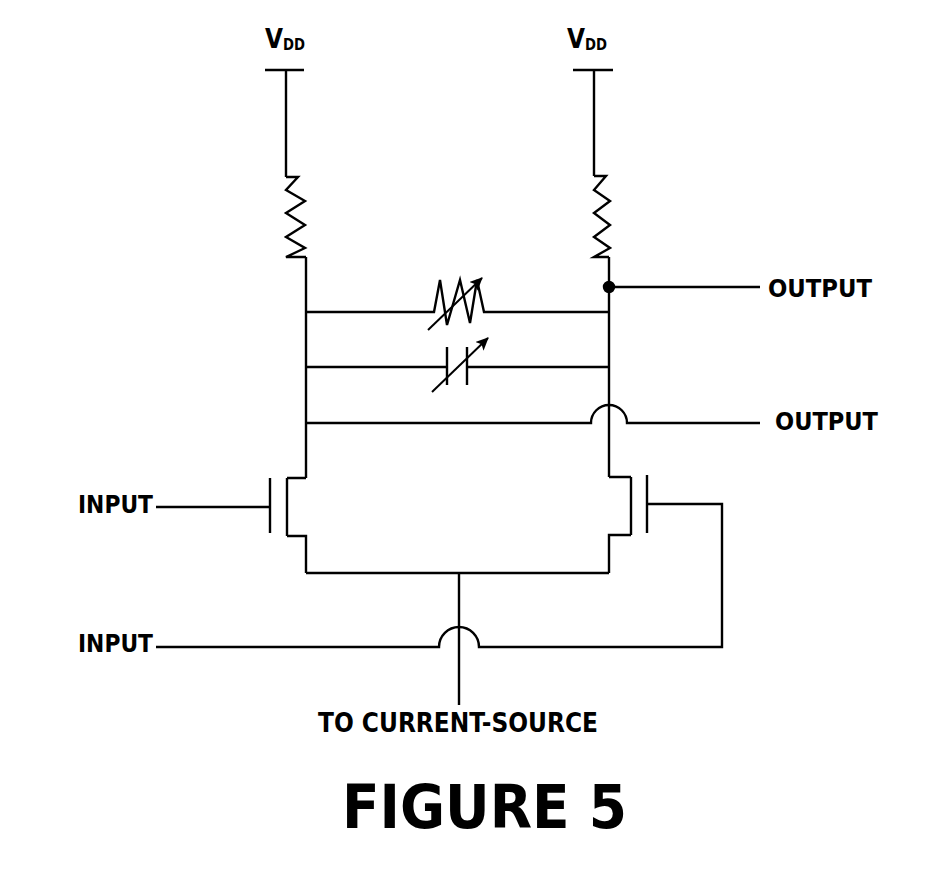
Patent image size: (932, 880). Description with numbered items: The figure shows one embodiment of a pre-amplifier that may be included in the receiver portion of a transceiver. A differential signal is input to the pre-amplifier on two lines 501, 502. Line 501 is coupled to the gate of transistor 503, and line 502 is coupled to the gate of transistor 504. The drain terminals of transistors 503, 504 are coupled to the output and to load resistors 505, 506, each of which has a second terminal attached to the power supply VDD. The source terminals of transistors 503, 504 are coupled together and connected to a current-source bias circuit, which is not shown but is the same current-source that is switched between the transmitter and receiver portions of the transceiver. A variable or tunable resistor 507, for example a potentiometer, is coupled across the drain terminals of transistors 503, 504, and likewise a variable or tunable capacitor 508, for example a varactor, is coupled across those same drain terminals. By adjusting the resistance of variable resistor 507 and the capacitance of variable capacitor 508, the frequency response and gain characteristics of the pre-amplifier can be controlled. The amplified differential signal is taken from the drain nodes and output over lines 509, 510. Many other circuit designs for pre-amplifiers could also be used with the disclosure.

The line 501 is at (213, 493).
The line 502 is at (439, 576).
The transistor 503 is at (306, 493).
The transistor 504 is at (608, 497).
The load resistor 505 is at (276, 219).
The load resistor 506 is at (629, 219).
The variable resistor 507 is at (428, 289).
The variable capacitor 508 is at (439, 358).
The line 509 is at (682, 276).
The line 510 is at (533, 409).